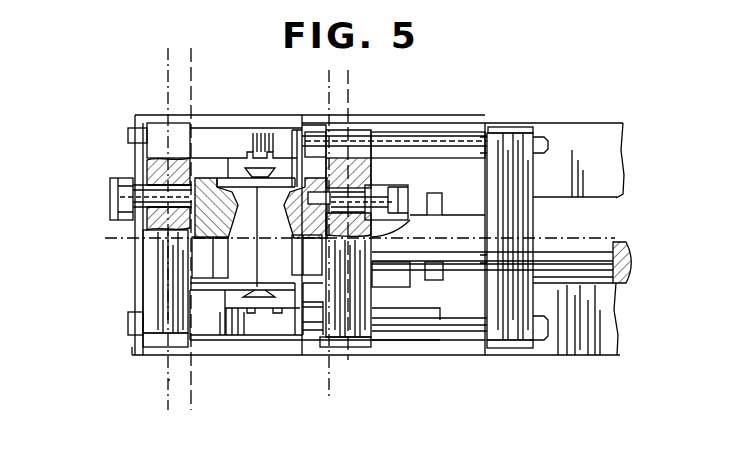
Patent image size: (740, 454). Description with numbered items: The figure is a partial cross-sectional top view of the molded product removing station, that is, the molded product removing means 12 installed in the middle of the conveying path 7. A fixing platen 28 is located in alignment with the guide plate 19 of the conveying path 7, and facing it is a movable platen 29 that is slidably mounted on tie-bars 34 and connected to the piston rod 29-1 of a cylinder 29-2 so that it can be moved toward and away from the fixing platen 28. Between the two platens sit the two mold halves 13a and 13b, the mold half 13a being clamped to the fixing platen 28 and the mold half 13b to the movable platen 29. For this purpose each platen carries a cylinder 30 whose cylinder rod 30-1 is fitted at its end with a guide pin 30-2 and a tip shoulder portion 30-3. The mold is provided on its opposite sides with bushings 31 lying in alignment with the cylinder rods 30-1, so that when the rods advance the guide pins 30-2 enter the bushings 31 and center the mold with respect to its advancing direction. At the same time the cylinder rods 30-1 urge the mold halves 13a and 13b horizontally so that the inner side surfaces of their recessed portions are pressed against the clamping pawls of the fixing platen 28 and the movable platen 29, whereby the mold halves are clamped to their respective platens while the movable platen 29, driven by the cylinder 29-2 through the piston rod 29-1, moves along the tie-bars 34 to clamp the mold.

The conveying path 7 is at (250, 366).
The molded product removing means 12 is at (120, 296).
The mold half 13a is at (243, 187).
The mold half 13b is at (285, 187).
The guide plate 19 is at (168, 386).
The fixing platen 28 is at (175, 128).
The movable platen 29 is at (355, 150).
The piston rod 29-1 is at (452, 246).
The cylinder 29-2 is at (614, 210).
The cylinder 30 is at (122, 223).
The cylinder rod 30-1 is at (377, 186).
The guide pin 30-2 is at (155, 214).
The tip shoulder portion 30-3 is at (190, 191).
The bushing 31 is at (257, 226).
The tie-bar 34 is at (468, 145).